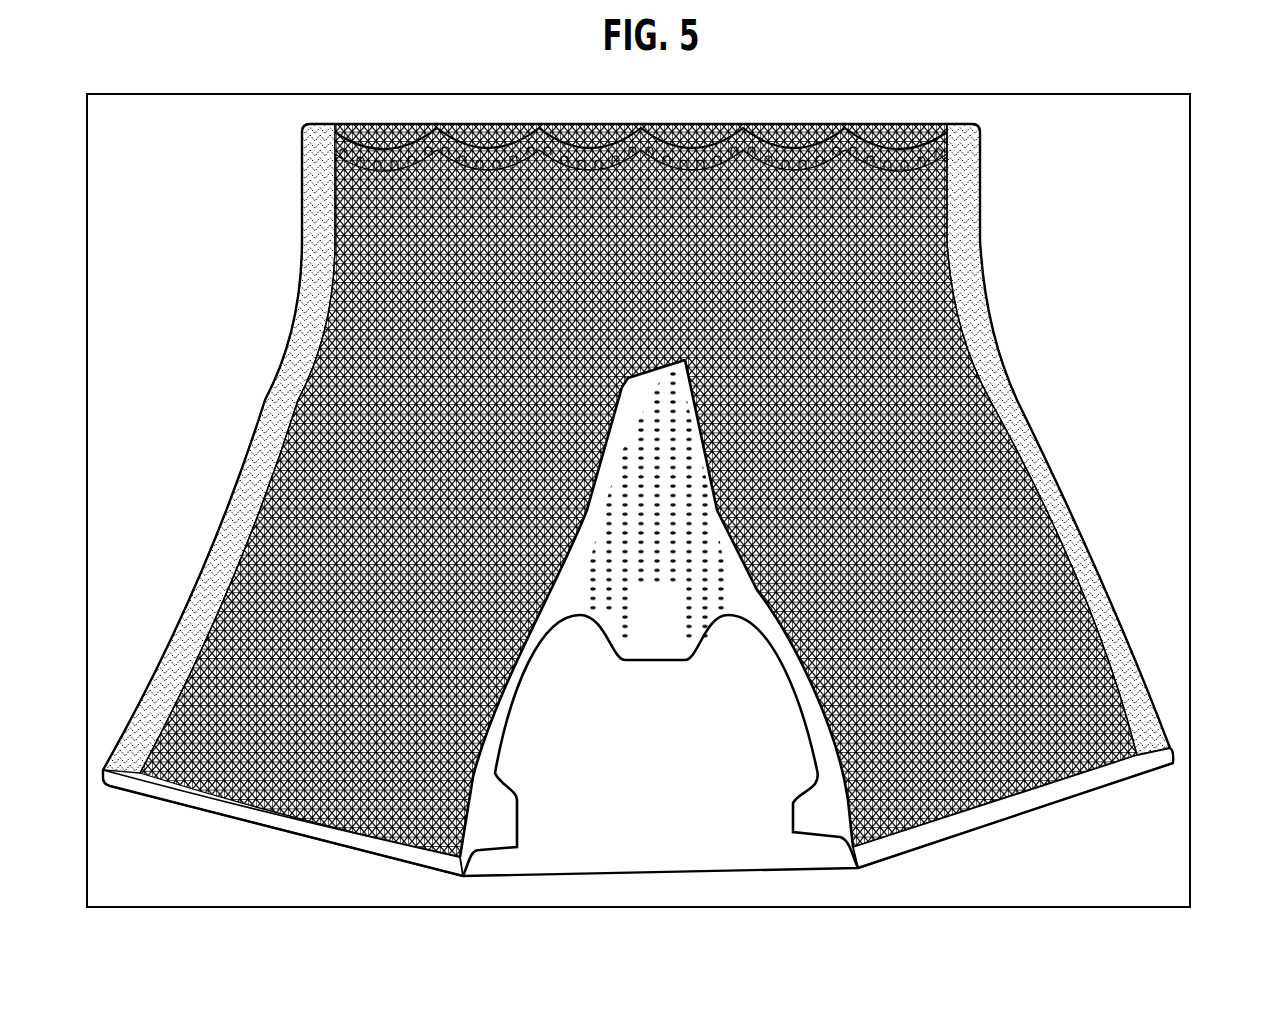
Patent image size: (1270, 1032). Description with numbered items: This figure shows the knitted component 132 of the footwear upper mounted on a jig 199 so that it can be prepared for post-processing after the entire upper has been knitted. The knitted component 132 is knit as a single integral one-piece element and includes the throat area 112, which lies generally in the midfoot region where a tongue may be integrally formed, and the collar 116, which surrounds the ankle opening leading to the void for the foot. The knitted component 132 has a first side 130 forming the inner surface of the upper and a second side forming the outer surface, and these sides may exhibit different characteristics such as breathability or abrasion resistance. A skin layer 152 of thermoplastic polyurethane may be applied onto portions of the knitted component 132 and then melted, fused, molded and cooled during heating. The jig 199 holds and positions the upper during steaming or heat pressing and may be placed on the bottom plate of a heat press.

The jig 199 is at (1160, 562).
The first side 130 is at (392, 788).
The skin layer 152 is at (950, 225).
The knitted component 132 is at (1020, 493).
The throat area 112 is at (642, 642).
The collar 116 is at (497, 722).